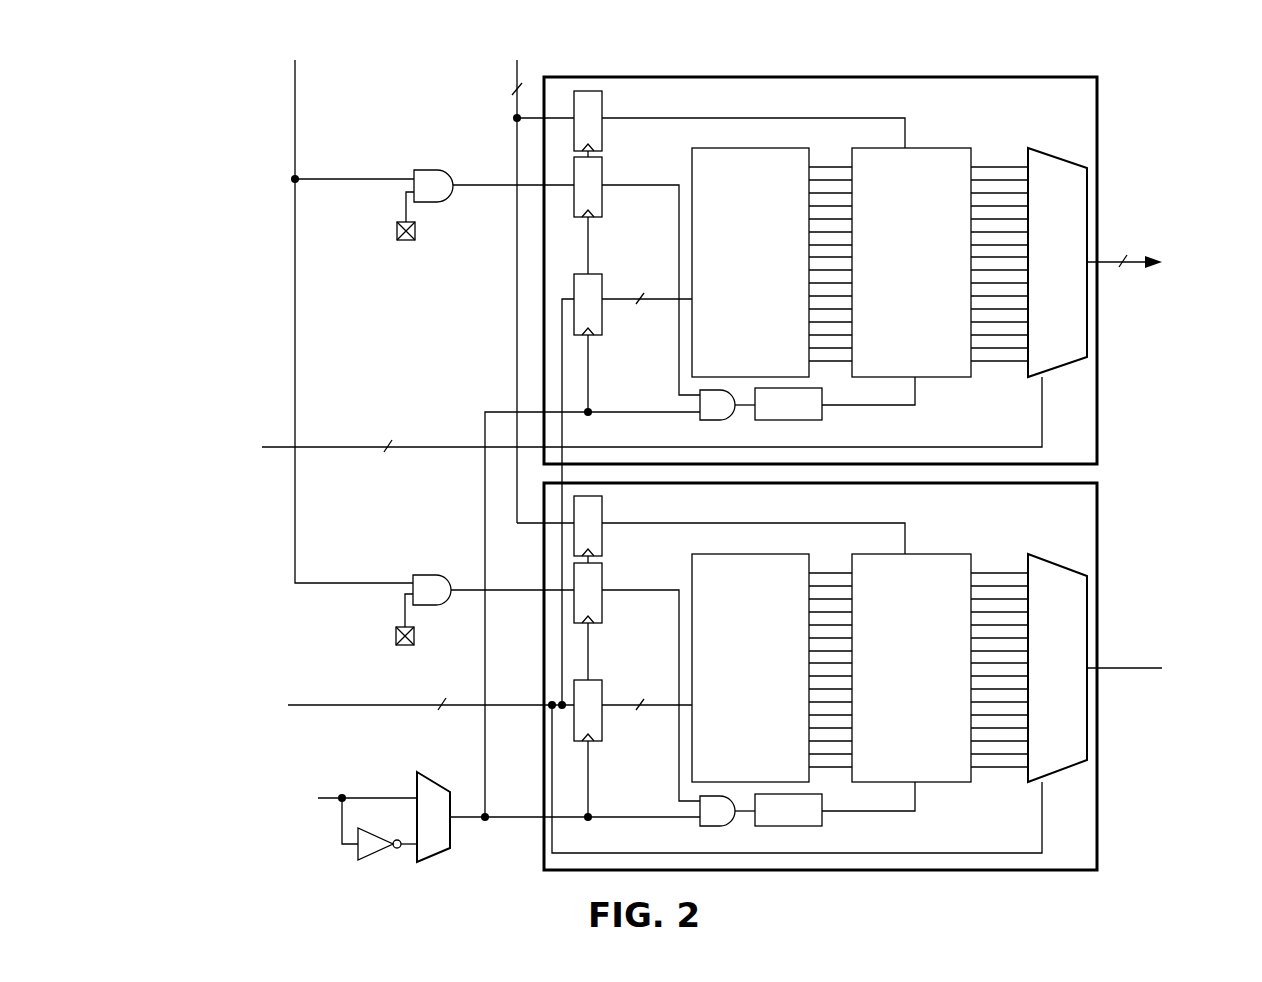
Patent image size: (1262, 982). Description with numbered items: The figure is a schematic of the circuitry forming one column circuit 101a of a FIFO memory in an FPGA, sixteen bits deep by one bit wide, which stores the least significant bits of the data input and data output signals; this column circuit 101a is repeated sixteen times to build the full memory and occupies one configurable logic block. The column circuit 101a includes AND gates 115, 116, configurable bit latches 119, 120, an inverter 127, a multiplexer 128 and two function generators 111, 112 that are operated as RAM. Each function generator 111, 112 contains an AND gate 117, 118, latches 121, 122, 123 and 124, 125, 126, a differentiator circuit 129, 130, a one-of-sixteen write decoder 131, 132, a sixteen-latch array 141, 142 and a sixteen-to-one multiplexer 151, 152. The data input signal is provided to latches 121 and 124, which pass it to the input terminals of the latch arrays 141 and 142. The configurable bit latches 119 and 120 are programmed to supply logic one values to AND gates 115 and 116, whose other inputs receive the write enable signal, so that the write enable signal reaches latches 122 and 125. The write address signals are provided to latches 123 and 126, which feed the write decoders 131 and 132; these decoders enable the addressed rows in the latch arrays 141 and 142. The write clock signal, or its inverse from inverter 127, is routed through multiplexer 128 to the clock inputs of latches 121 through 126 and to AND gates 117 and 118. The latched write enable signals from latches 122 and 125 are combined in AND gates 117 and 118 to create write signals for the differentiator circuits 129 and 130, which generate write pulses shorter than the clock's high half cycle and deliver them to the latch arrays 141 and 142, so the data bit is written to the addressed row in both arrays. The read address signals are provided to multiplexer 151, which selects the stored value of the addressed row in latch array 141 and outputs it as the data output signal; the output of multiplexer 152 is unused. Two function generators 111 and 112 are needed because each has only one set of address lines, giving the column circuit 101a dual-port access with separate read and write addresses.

The column circuit 101a is at (242, 157).
The function generator 111 is at (1066, 64).
The function generator 112 is at (1074, 880).
The AND gate 115 is at (438, 202).
The AND gate 116 is at (437, 605).
The AND gate 117 is at (708, 420).
The AND gate 118 is at (708, 826).
The configurable bit latch 119 is at (407, 240).
The configurable bit latch 120 is at (406, 645).
The latch 121 is at (604, 99).
The latch 122 is at (603, 173).
The latch 123 is at (603, 283).
The latch 124 is at (604, 504).
The latch 125 is at (603, 579).
The latch 126 is at (603, 685).
The inverter 127 is at (378, 860).
The multiplexer 128 is at (440, 848).
The differentiator circuit 129 is at (775, 420).
The differentiator circuit 130 is at (775, 826).
The 1-of-16 write decoder 131 is at (797, 148).
The 1-of-16 write decoder 132 is at (797, 554).
The 16-latch array 141 is at (946, 148).
The 16-latch array 142 is at (946, 554).
The 16-to-1 multiplexer 151 is at (1053, 150).
The 16-to-1 multiplexer 152 is at (1053, 556).